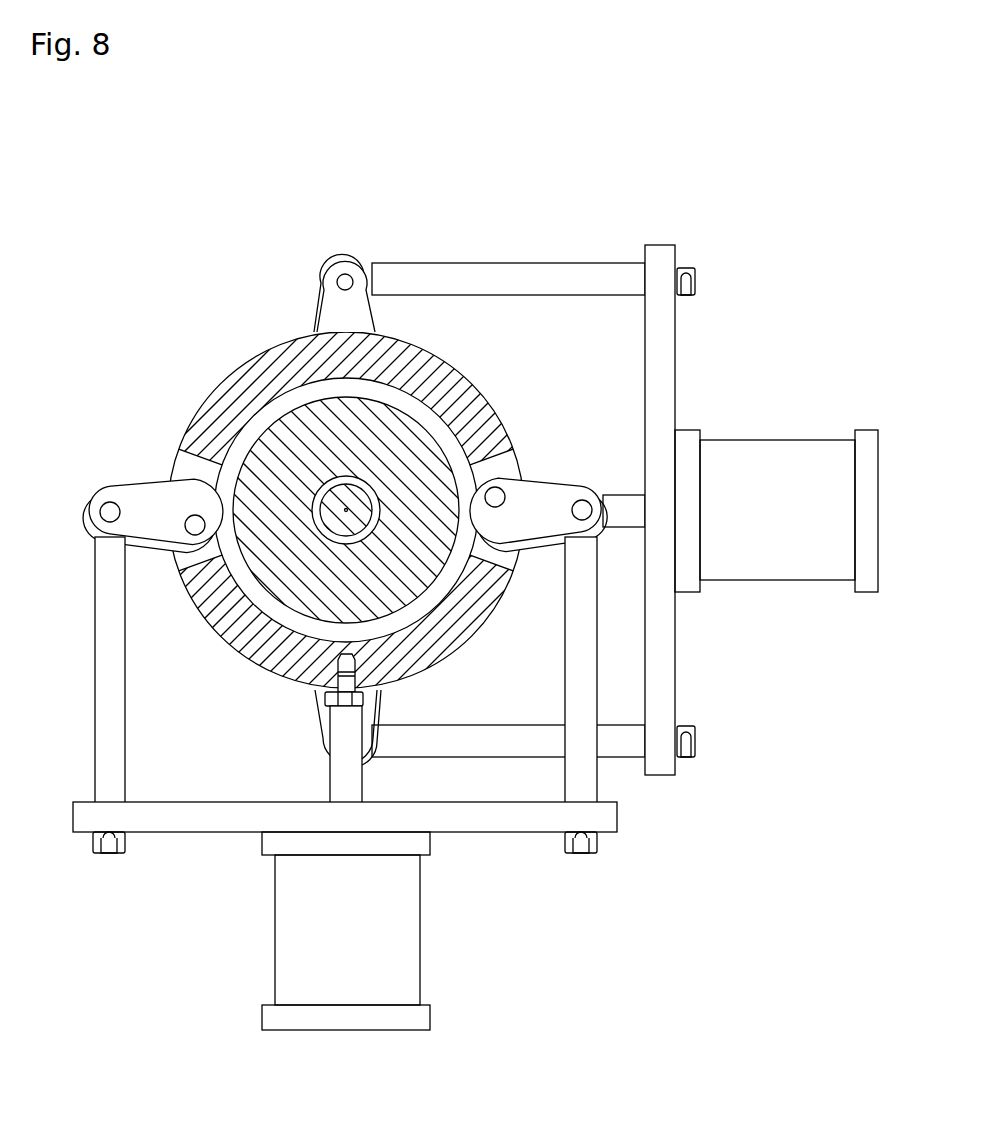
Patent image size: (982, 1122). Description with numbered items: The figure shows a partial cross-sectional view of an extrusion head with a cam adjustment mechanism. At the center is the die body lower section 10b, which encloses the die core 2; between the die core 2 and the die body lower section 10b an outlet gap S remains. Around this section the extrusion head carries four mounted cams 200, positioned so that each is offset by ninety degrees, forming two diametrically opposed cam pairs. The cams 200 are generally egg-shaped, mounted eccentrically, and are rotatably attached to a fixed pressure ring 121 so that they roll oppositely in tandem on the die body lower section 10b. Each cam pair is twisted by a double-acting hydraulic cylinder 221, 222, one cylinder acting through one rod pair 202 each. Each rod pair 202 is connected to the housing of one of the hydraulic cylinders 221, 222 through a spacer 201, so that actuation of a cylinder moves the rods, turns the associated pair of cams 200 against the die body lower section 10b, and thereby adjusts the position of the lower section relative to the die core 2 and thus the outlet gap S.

The die core 2 is at (323, 512).
The die body lower section 10b is at (425, 458).
The fixed pressure ring 121 is at (262, 378).
The cam 200 is at (338, 310).
The spacer 201 is at (668, 655).
The rod pair 202 is at (620, 740).
The double-acting hydraulic cylinder 221 is at (777, 462).
The double-acting hydraulic cylinder 222 is at (393, 938).
The outlet gap S is at (342, 535).